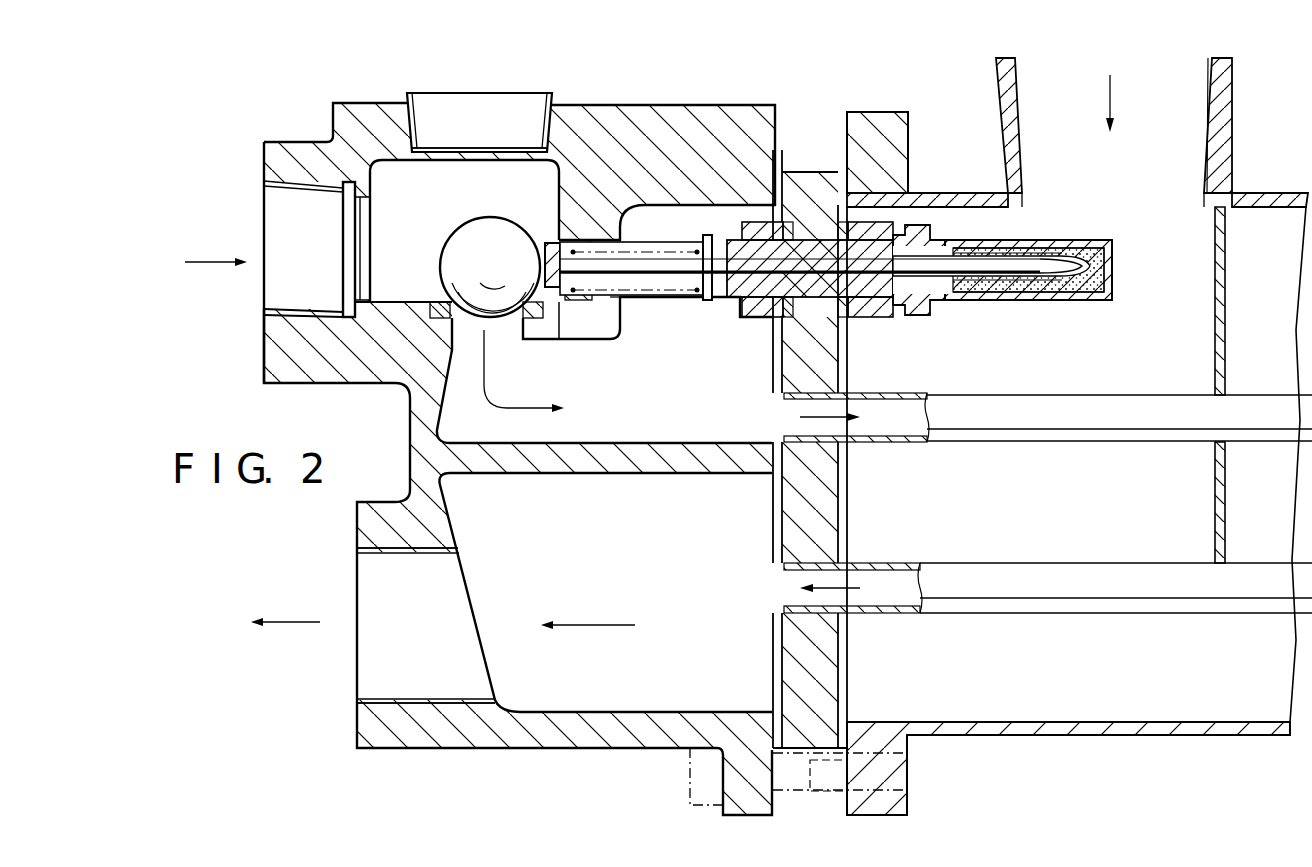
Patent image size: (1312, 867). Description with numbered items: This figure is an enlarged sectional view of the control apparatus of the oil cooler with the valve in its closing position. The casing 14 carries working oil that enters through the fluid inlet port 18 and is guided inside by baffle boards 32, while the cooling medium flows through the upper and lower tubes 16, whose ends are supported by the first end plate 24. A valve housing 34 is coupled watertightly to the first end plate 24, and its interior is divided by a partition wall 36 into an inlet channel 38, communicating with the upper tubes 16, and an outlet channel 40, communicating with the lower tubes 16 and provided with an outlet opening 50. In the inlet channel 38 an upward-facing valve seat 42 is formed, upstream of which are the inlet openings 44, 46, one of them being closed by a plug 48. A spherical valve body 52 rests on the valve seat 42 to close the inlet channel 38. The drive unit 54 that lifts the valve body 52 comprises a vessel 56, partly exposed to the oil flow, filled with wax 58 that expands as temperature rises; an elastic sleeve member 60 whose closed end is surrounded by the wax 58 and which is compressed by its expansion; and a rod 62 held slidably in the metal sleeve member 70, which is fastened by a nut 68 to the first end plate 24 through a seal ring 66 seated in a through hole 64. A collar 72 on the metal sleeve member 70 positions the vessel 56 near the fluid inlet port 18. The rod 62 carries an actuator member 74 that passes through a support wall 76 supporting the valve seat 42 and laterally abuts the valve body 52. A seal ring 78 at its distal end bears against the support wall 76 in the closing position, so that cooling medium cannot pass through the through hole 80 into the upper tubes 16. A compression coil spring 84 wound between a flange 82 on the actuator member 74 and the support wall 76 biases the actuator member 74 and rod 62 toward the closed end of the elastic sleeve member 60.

The casing 14 is at (1077, 463).
The tubes 16 is at (1137, 436).
The fluid inlet port 18 is at (1205, 96).
The first end plate 24 is at (828, 642).
The baffle boards 32 is at (1226, 247).
The valve housing 34 is at (711, 109).
The partition wall 36 is at (600, 463).
The inlet channel 38 is at (717, 438).
The outlet channel 40 is at (633, 725).
The valve seat 42 is at (435, 302).
The inlet opening 44 is at (304, 302).
The inlet opening 46 is at (548, 152).
The plug 48 is at (530, 94).
The outlet opening 50 is at (428, 700).
The spherical valve body 52 is at (469, 219).
The drive unit 54 is at (953, 236).
The vessel 56 is at (1107, 247).
The wax 58 is at (1073, 293).
The elastic sleeve member 60 is at (1027, 283).
The rod 62 is at (1046, 263).
The through hole 64 is at (811, 295).
The seal ring 66 is at (790, 233).
The nut 68 is at (753, 315).
The metal sleeve member 70 is at (822, 247).
The collar 72 is at (878, 312).
The actuator member 74 is at (542, 255).
The support wall 76 is at (624, 325).
The seal ring 78 is at (565, 238).
The through hole 80 is at (593, 302).
The flange 82 is at (706, 300).
The compression coil spring 84 is at (697, 292).